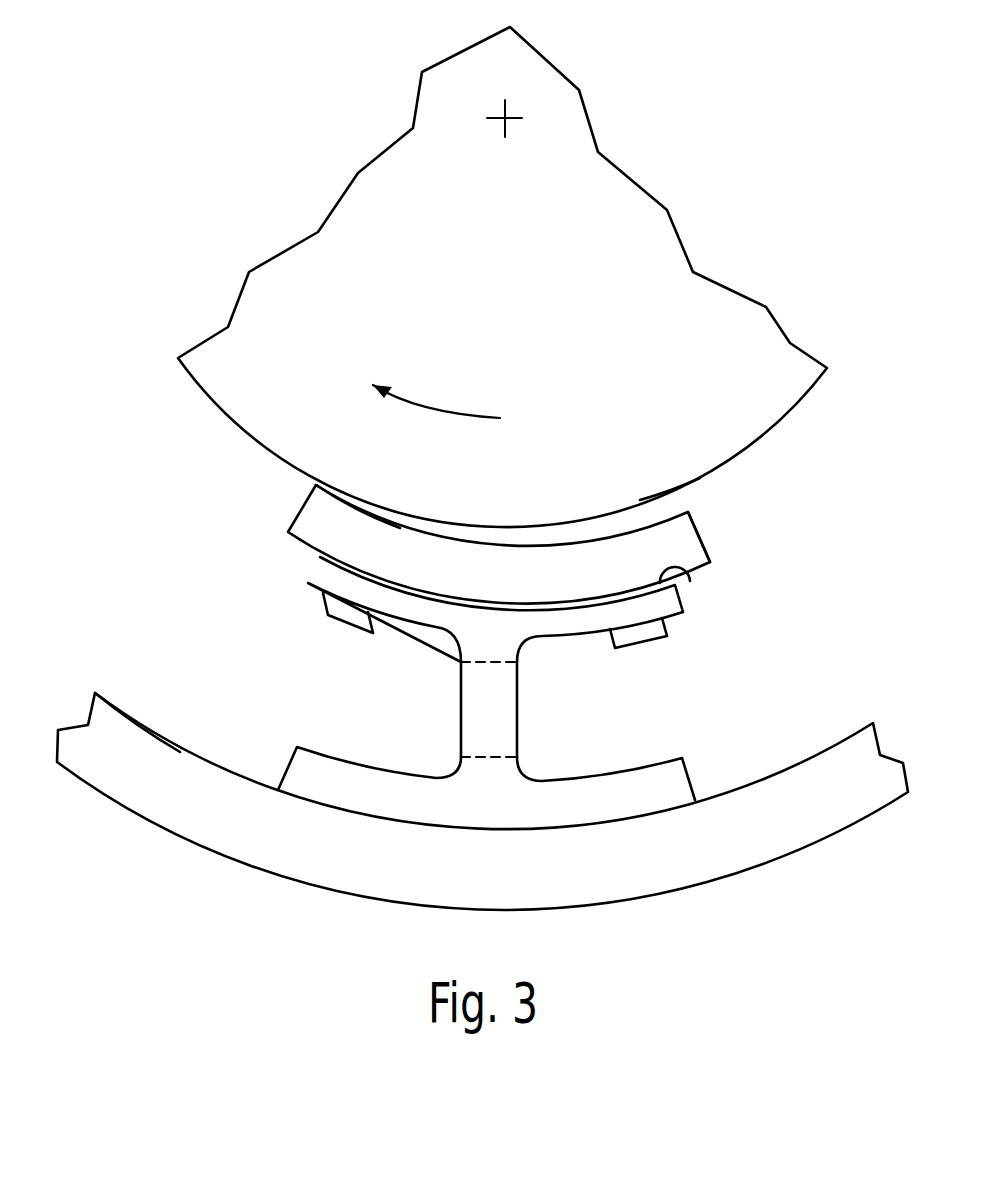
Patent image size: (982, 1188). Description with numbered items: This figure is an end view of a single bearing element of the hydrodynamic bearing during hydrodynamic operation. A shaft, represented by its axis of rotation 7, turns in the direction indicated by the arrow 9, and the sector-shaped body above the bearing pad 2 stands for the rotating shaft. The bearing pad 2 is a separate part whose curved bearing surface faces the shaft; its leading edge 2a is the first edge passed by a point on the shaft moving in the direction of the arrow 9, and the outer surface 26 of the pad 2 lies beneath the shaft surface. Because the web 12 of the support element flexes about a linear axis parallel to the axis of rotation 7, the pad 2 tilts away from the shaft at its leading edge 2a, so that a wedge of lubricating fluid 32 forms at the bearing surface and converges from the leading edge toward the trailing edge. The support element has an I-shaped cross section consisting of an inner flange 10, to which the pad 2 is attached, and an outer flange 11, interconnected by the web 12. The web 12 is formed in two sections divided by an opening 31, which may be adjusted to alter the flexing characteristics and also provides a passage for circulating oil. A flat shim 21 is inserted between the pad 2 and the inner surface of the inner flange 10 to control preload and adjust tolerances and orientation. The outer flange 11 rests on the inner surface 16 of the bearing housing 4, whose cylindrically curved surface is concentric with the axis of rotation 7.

The axis 7 is at (505, 113).
The arrow 9 is at (492, 420).
The bearing pad 2 is at (315, 532).
The leading edge 2a is at (707, 545).
The outer surface of rotor segment 26 is at (330, 490).
The wedge of lubricating fluid 32 is at (668, 507).
The flat shim 21 is at (690, 572).
The inner flange 10 is at (322, 593).
The web 12 is at (520, 707).
The opening 31 is at (472, 752).
The outer flange 11 is at (663, 758).
The bearing housing 4 is at (785, 842).
The inner surface of stator ring 16 is at (123, 715).